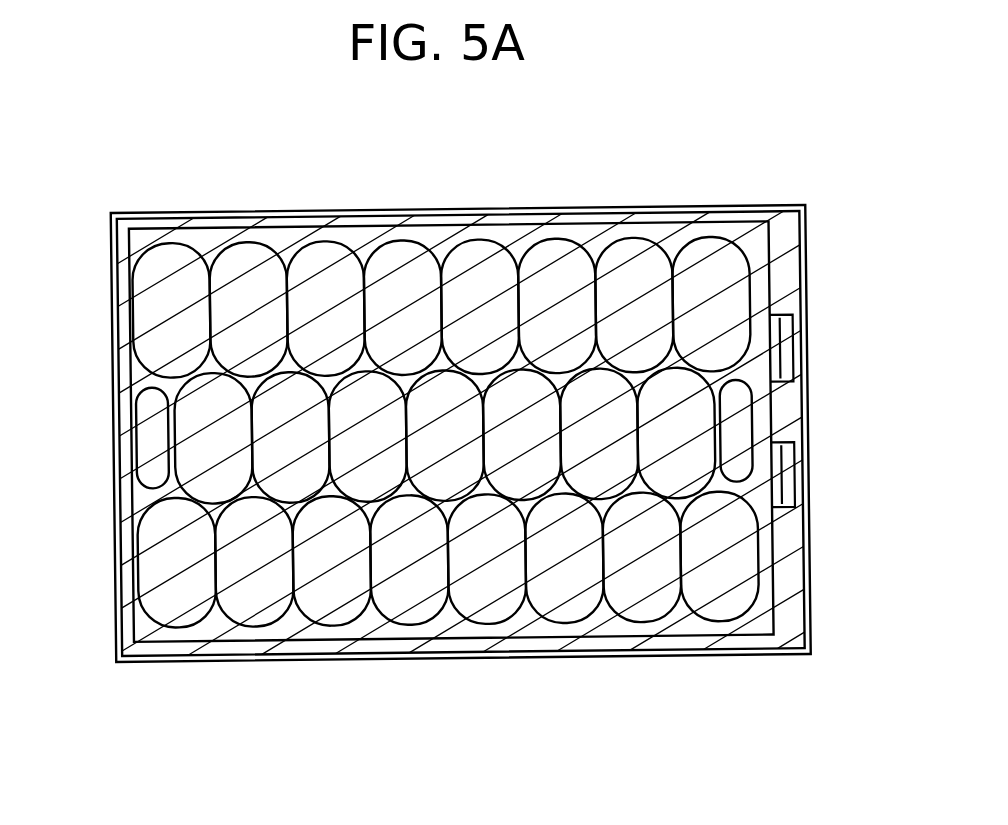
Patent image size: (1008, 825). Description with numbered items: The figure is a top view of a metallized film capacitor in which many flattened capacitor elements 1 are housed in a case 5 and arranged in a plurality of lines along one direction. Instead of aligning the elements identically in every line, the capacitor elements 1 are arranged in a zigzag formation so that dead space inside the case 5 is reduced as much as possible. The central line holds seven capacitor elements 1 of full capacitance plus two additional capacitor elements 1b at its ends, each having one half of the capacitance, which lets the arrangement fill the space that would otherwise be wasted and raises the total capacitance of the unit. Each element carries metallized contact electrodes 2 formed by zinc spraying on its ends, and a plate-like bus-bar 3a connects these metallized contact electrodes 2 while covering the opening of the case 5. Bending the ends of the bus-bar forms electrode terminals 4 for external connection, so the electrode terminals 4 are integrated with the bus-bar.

The capacitor element 1 is at (752, 303).
The capacitor element 1b is at (140, 415).
The metallized contact electrode 2 is at (172, 560).
The bus-bar 3a is at (220, 227).
The electrode terminal 4 is at (795, 350).
The case 5 is at (633, 215).